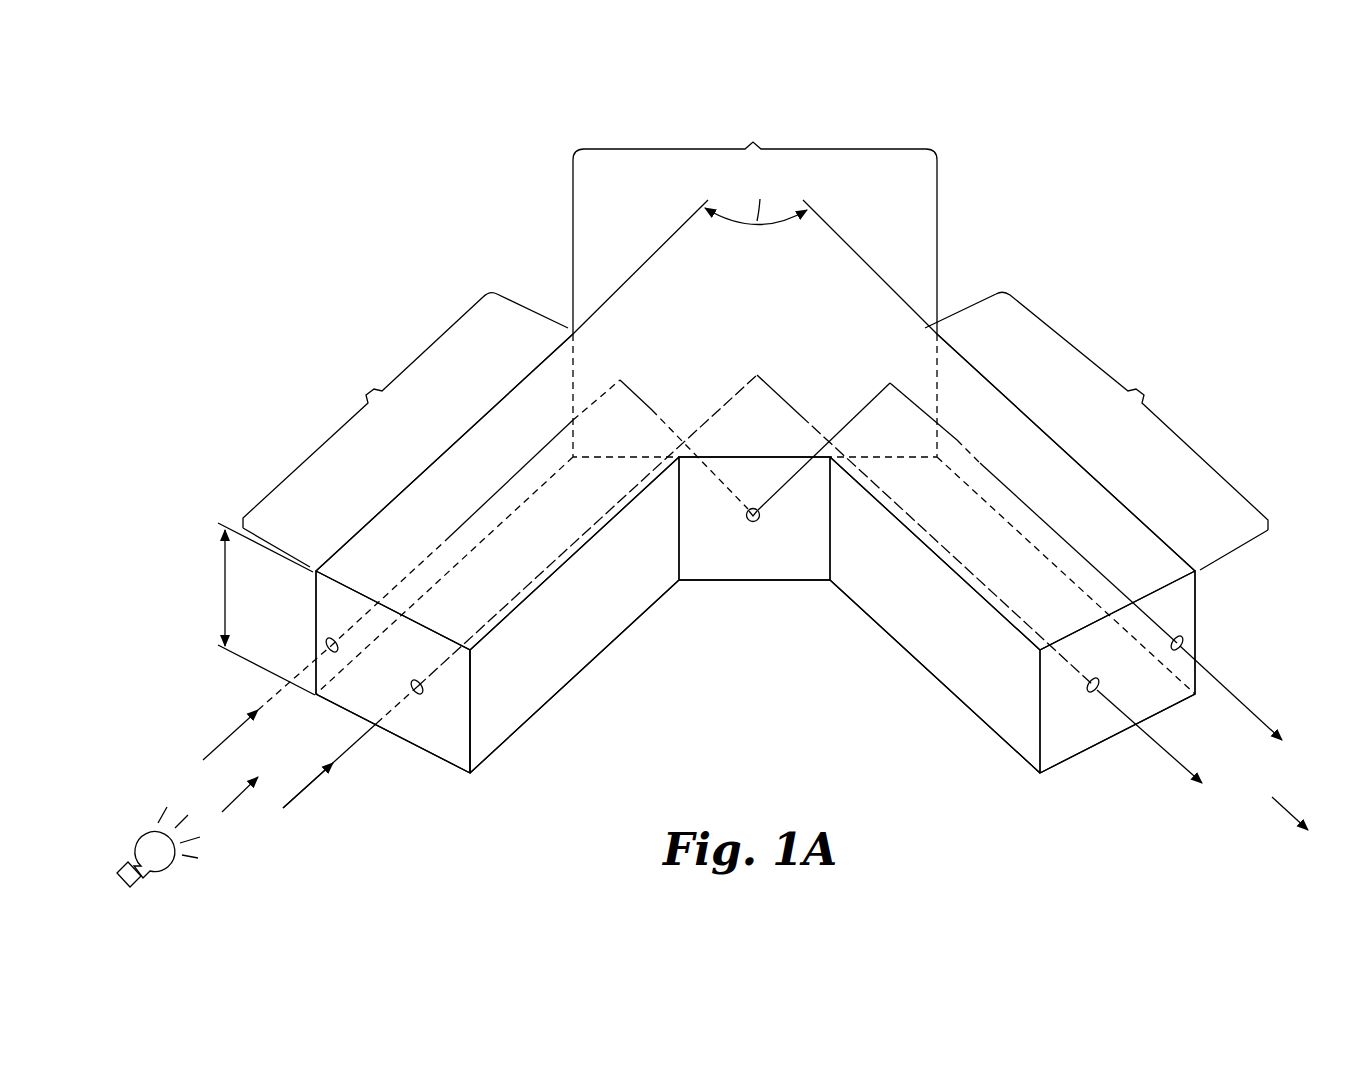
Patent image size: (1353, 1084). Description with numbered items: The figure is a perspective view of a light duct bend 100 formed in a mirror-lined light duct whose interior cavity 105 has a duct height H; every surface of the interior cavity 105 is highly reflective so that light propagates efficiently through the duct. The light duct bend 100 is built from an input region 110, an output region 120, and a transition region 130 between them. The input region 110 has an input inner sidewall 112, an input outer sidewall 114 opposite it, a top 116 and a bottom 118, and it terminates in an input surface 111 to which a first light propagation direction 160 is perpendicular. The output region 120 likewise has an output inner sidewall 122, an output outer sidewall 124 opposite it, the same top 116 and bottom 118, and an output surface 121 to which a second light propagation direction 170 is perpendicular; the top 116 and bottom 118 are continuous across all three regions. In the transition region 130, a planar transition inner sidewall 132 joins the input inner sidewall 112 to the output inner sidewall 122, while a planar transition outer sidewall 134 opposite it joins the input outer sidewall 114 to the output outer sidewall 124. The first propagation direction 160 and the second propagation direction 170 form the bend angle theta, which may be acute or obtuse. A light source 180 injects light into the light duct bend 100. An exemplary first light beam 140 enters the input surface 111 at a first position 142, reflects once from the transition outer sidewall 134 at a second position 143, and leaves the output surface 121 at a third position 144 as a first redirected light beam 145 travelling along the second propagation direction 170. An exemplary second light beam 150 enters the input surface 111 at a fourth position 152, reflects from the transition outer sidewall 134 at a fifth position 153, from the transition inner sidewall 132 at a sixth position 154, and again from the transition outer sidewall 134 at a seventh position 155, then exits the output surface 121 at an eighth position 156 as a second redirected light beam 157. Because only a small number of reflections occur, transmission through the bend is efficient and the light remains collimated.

The light duct bend 100 is at (1032, 192).
The interior cavity 105 is at (513, 545).
The input region 110 is at (405, 430).
The input surface 111 is at (343, 695).
The input inner sidewall 112 is at (498, 718).
The input outer sidewall 114 is at (387, 551).
The top 116 is at (455, 469).
The bottom 118 is at (582, 625).
The output region 120 is at (1096, 431).
The output surface 121 is at (1167, 697).
The output inner sidewall 122 is at (1012, 720).
The output outer sidewall 124 is at (1122, 551).
The transition region 130 is at (755, 224).
The transition inner sidewall 132 is at (705, 568).
The transition outer sidewall 134 is at (706, 366).
The first light beam 140 is at (307, 788).
The first position 142 is at (418, 696).
The second position 143 is at (752, 373).
The third position 144 is at (1095, 692).
The first redirected light beam 145 is at (1170, 760).
The second light beam 150 is at (205, 757).
The fourth position 152 is at (327, 638).
The fifth position 153 is at (616, 378).
The sixth position 154 is at (758, 522).
The seventh position 155 is at (893, 379).
The eighth position 156 is at (1181, 640).
The second redirected light beam 157 is at (1253, 709).
The first light propagation direction 160 is at (228, 811).
The second light propagation direction 170 is at (1280, 800).
The light source 180 is at (142, 833).
The duct height H is at (223, 583).